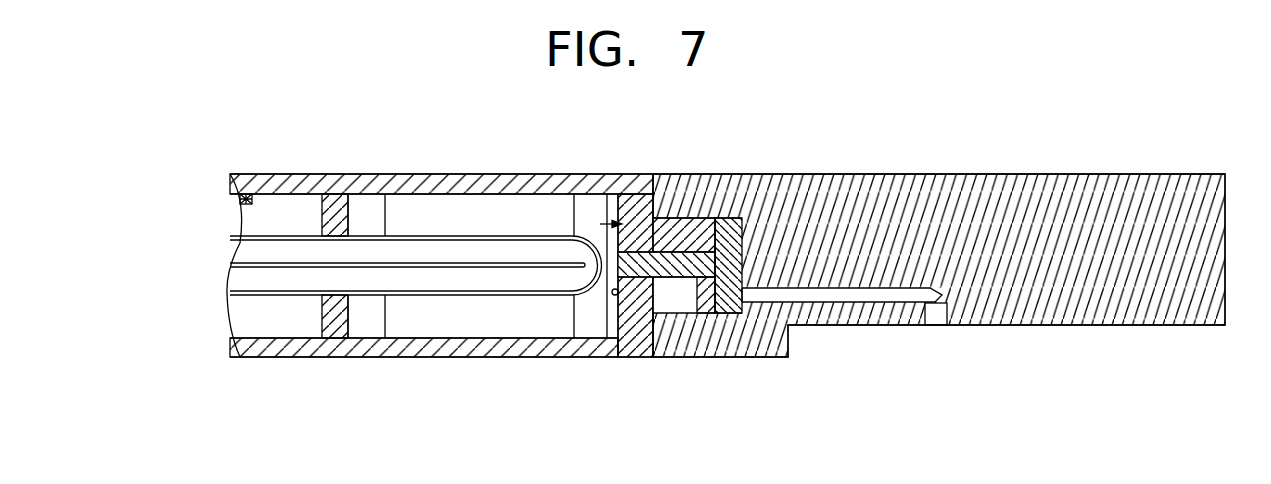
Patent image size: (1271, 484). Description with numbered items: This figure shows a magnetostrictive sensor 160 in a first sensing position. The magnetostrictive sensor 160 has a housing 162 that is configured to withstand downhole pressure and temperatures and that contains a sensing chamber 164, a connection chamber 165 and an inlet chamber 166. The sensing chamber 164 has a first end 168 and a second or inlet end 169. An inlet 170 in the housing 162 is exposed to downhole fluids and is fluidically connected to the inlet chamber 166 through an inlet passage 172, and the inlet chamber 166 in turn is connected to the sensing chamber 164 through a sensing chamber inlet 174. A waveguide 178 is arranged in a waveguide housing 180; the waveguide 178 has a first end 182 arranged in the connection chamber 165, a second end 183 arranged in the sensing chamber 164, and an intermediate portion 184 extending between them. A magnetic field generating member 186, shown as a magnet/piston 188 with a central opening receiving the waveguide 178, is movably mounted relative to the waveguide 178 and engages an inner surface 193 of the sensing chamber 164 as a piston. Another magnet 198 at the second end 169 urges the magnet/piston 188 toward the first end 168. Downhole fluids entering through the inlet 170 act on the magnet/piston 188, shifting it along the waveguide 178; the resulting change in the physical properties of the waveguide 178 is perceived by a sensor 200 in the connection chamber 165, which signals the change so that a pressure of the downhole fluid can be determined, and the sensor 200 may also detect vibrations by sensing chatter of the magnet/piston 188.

The magnetostrictive sensor 160 is at (768, 100).
The housing 162 is at (677, 170).
The sensing chamber 164 is at (535, 213).
The connection chamber 165 is at (315, 188).
The inlet chamber 166 is at (737, 232).
The first end 168 is at (352, 220).
The second or inlet end 169 is at (620, 292).
The inlet 170 is at (945, 342).
The inlet passage 172 is at (815, 278).
The sensing chamber inlet 174 is at (742, 307).
The waveguide 178 is at (474, 288).
The waveguide housing 180 is at (416, 302).
The first end 182 is at (297, 247).
The second end 183 is at (591, 272).
The intermediate portion 184 is at (407, 248).
The magnetic field generating member 186 is at (620, 320).
The magnet/piston 188 is at (652, 218).
The inner surface 193 is at (503, 341).
The magnet 198 is at (363, 318).
The sensor 200 is at (240, 198).